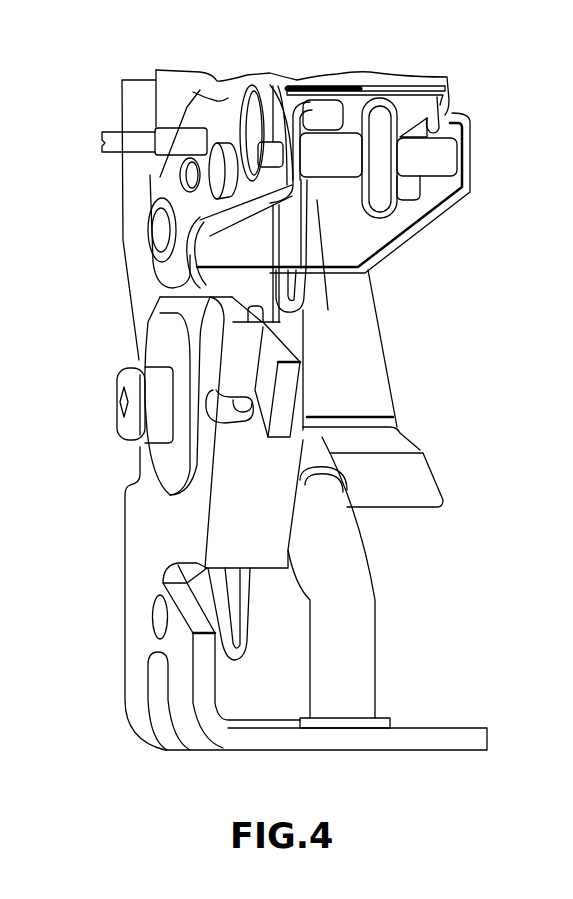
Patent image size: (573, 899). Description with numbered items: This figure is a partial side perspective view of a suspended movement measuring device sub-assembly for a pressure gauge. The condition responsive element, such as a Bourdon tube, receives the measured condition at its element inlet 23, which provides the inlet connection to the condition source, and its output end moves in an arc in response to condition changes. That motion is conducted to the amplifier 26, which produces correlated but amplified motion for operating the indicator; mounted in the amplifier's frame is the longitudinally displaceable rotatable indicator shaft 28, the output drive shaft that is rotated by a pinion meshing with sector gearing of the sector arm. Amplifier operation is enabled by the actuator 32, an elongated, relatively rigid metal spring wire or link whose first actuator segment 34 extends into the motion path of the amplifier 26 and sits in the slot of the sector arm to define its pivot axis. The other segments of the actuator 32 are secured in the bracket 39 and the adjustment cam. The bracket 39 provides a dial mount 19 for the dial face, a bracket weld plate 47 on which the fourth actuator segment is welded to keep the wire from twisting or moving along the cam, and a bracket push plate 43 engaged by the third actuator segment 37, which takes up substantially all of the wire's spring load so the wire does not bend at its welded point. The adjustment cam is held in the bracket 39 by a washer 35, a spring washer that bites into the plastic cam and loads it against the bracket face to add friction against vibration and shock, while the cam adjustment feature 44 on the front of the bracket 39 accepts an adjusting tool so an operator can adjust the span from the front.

The dial mount 19 is at (152, 618).
The element inlet 23 is at (350, 623).
The amplifier 26 is at (230, 113).
The indicator shaft 28 is at (132, 143).
The actuator 32 is at (298, 297).
The first actuator segment 34 is at (320, 108).
The washer 35 is at (162, 353).
The third actuator segment 37 is at (240, 643).
The bracket 39 is at (150, 547).
The bracket push plate 43 is at (253, 512).
The cam adjustment feature 44 is at (113, 424).
The bracket weld plate 47 is at (303, 380).